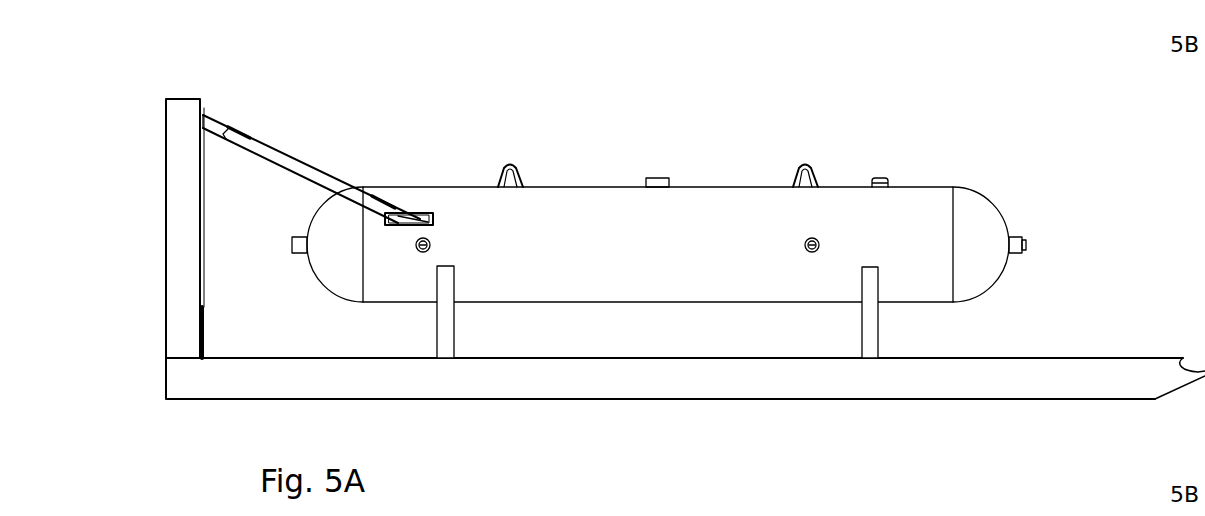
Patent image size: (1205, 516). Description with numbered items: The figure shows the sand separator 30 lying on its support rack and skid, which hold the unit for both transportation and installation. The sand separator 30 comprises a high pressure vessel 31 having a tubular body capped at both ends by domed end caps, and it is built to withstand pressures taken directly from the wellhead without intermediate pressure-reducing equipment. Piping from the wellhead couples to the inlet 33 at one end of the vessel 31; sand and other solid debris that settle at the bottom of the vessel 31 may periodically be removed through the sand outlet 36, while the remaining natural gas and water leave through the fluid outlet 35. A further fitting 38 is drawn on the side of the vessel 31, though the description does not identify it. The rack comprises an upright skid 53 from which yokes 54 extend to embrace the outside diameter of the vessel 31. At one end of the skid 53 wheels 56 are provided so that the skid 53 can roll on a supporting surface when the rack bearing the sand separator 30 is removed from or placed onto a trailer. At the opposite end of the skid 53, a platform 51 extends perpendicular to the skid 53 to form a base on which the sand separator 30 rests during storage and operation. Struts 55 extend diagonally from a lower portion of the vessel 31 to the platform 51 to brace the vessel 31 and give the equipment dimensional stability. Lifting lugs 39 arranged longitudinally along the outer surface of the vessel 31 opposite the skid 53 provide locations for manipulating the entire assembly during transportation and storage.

The sand separator 30 is at (958, 168).
The high pressure vessel 31 is at (687, 297).
The inlet 33 is at (1027, 240).
The fluid outlet 35 is at (820, 246).
The sand outlet 36 is at (290, 241).
The valve 38 is at (432, 247).
The lifting lugs 39 is at (515, 168).
The platform 51 is at (183, 290).
The upright skid 53 is at (996, 393).
The yokes 54 is at (456, 339).
The struts 55 is at (313, 165).
The wheels 56 is at (1204, 288).